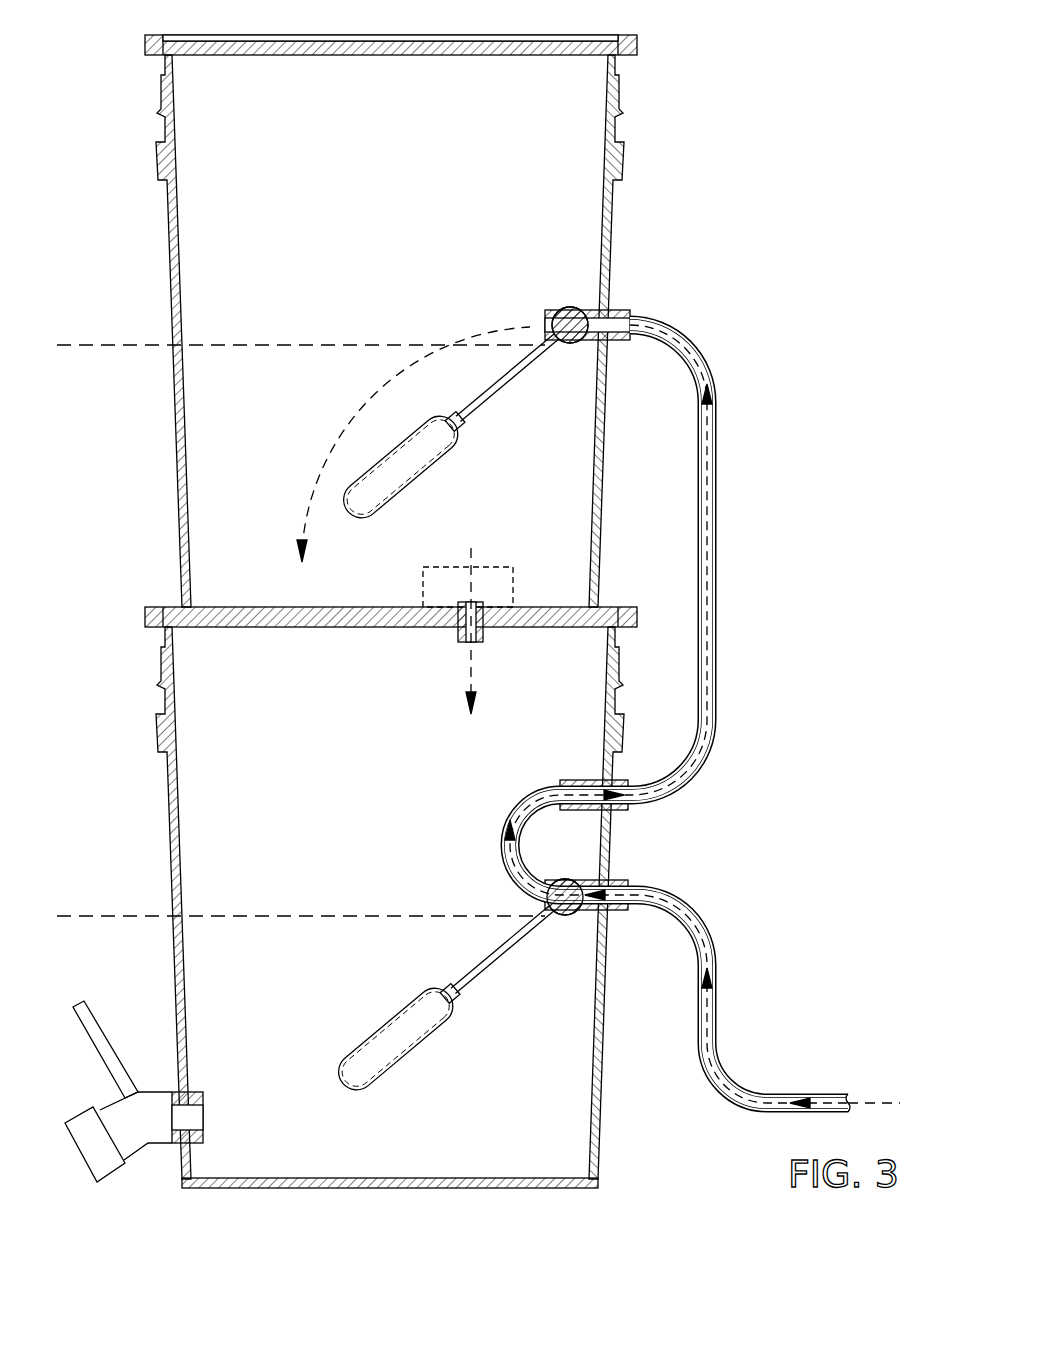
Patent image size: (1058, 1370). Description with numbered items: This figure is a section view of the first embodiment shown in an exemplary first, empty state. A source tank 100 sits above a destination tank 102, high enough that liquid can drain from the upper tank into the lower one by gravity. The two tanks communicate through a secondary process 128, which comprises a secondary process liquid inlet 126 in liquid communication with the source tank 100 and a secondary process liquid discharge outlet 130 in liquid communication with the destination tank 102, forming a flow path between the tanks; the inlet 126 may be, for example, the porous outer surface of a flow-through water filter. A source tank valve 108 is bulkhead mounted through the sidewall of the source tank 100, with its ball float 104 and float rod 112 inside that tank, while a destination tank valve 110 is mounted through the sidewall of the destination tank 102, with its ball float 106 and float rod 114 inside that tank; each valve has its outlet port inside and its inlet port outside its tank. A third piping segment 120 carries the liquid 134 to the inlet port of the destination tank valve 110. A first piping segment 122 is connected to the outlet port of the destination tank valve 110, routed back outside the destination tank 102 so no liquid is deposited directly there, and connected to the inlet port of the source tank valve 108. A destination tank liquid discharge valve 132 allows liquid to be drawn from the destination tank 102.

The source tank 100 is at (176, 455).
The destination tank 102 is at (170, 830).
The ball float of the source tank valve 104 is at (408, 490).
The ball float of the destination tank valve 106 is at (382, 1025).
The source tank valve 108 is at (560, 308).
The destination tank valve 110 is at (580, 878).
The float rod of the source tank valve 112 is at (128, 343).
The float rod of the destination tank valve 114 is at (120, 913).
The third piping segment 120 is at (665, 888).
The first piping segment 122 is at (676, 326).
The secondary process liquid inlet 126 is at (422, 588).
The secondary process 128 is at (502, 575).
The secondary process liquid discharge outlet 130 is at (480, 642).
The destination tank liquid discharge valve 132 is at (103, 1110).
The the liquid in the system 134 is at (378, 372).